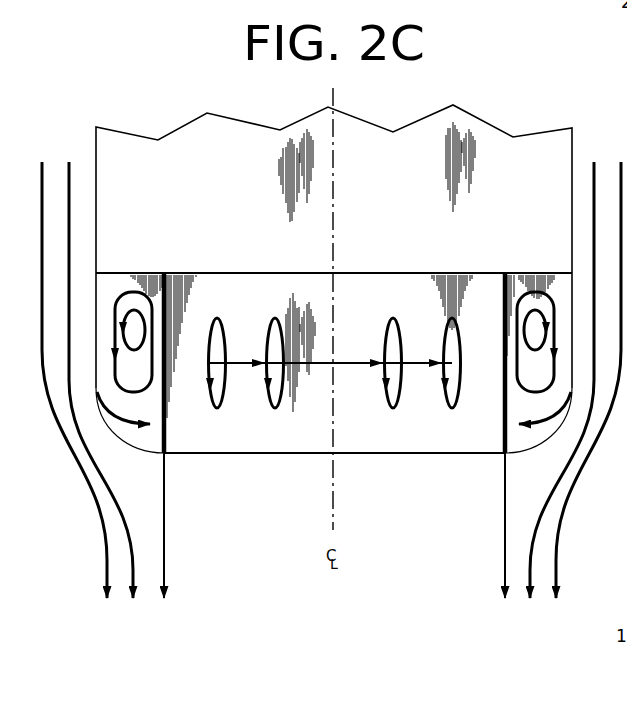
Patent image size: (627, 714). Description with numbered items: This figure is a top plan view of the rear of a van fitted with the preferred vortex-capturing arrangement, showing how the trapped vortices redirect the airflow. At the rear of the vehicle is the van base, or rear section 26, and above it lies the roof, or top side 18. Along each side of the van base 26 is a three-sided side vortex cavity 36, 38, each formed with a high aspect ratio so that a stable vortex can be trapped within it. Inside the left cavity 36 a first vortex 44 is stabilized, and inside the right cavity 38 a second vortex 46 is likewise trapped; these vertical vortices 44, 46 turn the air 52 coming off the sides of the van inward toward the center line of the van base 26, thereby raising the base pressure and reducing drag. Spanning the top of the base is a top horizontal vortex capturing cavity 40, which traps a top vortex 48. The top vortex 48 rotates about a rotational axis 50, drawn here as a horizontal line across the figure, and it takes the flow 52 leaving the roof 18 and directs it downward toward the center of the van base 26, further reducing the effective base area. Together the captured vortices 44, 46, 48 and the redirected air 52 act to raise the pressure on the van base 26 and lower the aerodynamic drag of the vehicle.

The top side 18 is at (377, 189).
The rear section 26 is at (306, 272).
The side vortex cavity 36 is at (110, 288).
The side vortex cavity 38 is at (560, 288).
The top horizontal vortex capturing cavity 40 is at (379, 288).
The first vortex 44 is at (149, 293).
The second vortex 46 is at (519, 294).
The top vortex 48 is at (450, 408).
The rotational axis 50 is at (234, 364).
The air 52 is at (76, 479).